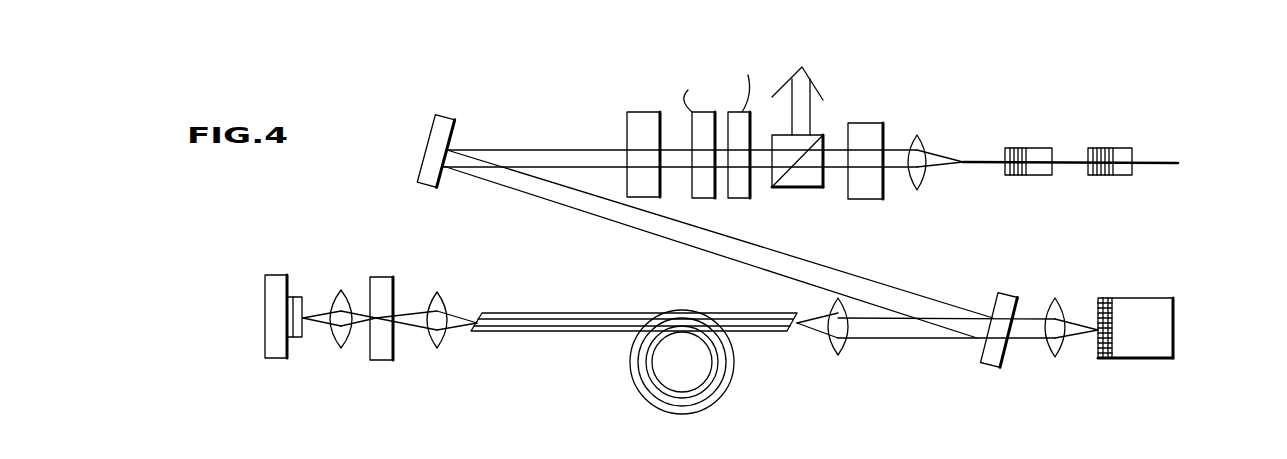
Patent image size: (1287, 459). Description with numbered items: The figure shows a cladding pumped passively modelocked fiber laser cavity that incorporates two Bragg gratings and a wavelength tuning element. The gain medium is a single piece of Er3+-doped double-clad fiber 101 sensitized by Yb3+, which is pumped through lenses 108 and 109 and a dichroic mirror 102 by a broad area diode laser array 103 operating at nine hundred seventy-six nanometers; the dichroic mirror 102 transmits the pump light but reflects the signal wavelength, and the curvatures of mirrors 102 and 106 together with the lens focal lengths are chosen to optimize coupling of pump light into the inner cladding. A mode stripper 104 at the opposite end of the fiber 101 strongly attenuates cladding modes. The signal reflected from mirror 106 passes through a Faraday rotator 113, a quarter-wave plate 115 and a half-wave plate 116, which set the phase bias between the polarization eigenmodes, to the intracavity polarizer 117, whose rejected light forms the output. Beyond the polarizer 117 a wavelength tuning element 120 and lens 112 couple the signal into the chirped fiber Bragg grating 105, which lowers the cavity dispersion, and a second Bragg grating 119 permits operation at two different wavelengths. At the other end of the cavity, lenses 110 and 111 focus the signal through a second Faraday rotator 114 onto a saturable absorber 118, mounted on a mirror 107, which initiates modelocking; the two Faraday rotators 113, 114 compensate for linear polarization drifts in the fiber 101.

The double-clad gain fiber 101 is at (708, 403).
The dichroic mirror 102 is at (1023, 263).
The diode laser array 103 is at (1100, 353).
The mode stripper 104 is at (525, 313).
The chirped fiber Bragg grating 105 is at (1027, 148).
The mirror 106 is at (450, 85).
The mirror 107 is at (268, 275).
The lens 108 is at (1055, 300).
The lens 109 is at (838, 354).
The lens 110 is at (453, 265).
The lens 111 is at (333, 290).
The lens 112 is at (922, 188).
The Faraday rotator 113 is at (627, 133).
The Faraday rotator 114 is at (393, 352).
The quarter-wave plate 115 is at (703, 198).
The half-wave plate 116 is at (747, 198).
The intracavity polarizer 117 is at (807, 187).
The saturable absorber 118 is at (305, 337).
The second Bragg grating 119 is at (1145, 125).
The wavelength tuning element 120 is at (868, 123).